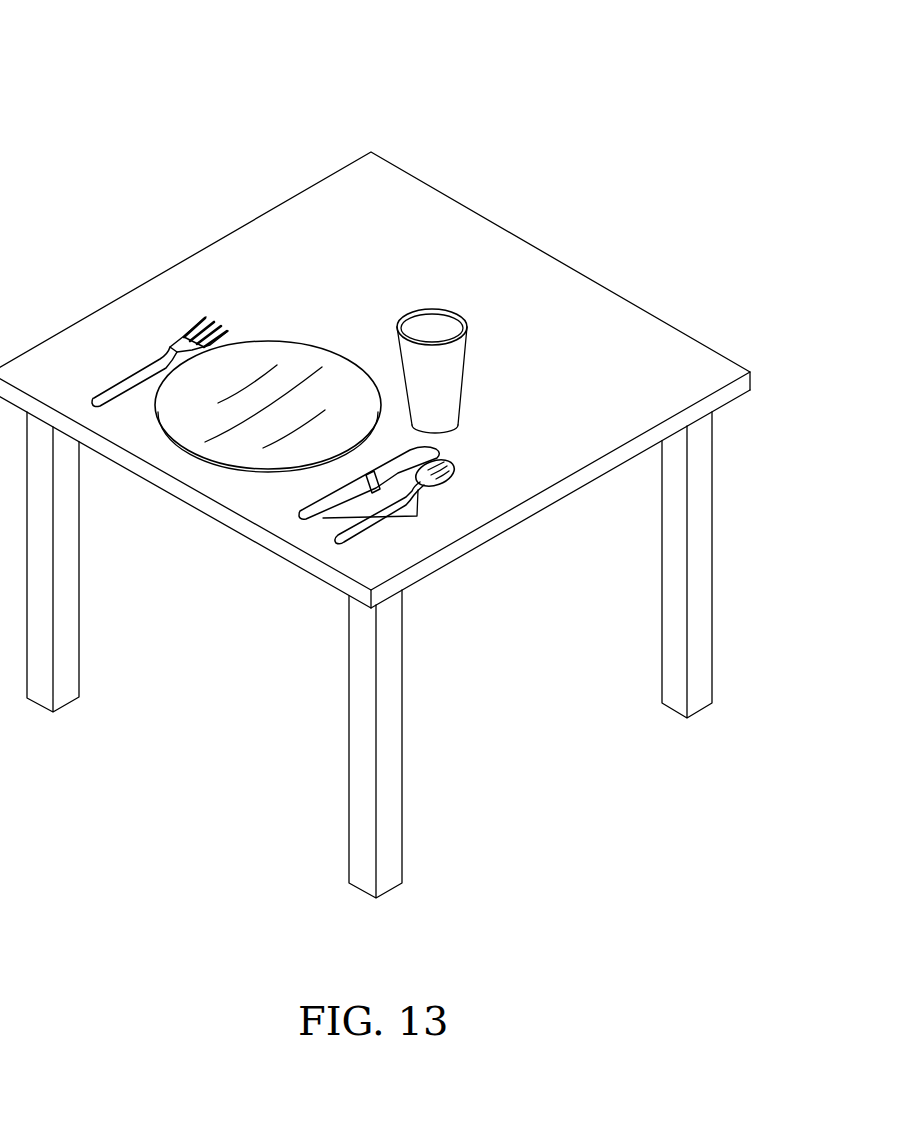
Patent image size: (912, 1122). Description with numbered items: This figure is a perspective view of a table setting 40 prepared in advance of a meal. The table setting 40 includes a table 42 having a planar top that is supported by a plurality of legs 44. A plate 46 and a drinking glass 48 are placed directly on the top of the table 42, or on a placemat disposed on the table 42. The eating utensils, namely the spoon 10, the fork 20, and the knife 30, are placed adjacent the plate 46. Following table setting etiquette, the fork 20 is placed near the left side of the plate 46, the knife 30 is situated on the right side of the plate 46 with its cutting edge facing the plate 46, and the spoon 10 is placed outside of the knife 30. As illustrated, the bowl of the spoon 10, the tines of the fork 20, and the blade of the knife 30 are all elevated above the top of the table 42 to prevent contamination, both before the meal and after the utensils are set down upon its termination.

The spoon 10 is at (470, 471).
The fork 20 is at (163, 325).
The knife 30 is at (456, 445).
The table setting 40 is at (147, 90).
The table 42 is at (666, 343).
The legs 44 is at (80, 643).
The plate 46 is at (299, 362).
The drinking glass 48 is at (465, 375).